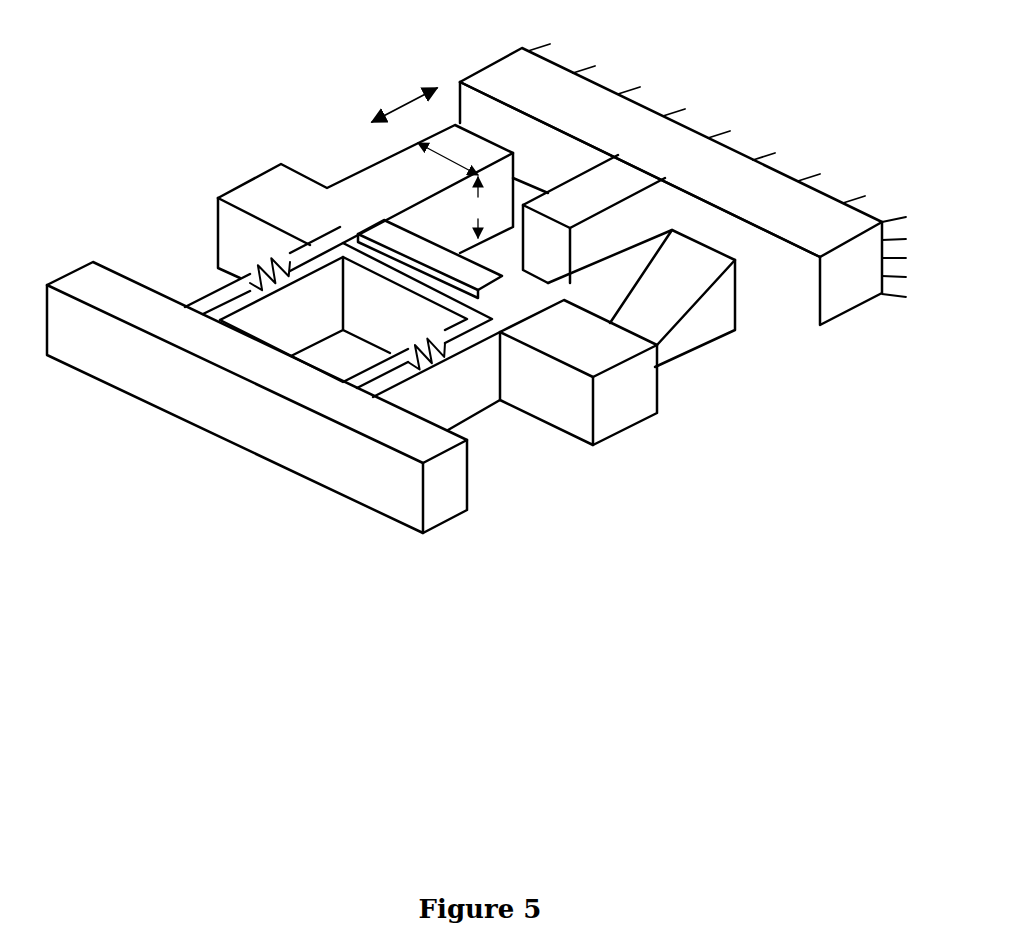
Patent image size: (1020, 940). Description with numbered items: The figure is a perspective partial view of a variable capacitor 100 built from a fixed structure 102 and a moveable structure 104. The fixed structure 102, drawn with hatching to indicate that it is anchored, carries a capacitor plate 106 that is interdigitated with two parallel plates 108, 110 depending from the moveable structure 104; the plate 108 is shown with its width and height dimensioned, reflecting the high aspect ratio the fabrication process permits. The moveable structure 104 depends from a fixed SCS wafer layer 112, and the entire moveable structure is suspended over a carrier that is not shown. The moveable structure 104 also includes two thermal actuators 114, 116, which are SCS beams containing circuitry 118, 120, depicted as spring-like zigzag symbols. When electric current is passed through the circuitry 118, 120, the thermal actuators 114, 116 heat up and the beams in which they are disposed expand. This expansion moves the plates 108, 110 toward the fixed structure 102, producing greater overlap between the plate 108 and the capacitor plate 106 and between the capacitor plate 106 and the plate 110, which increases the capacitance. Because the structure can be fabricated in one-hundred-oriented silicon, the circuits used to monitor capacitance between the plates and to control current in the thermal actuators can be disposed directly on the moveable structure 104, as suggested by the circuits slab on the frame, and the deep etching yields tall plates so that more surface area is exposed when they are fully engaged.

The variable capacitor 100 is at (308, 74).
The fixed structure 102 is at (478, 72).
The moveable structure 104 is at (662, 390).
The capacitor plate 106 is at (617, 185).
The parallel plate 108 is at (348, 178).
The parallel plate 110 is at (700, 333).
The fixed SCS wafer layer 112 is at (472, 480).
The thermal actuator 114 is at (230, 281).
The thermal actuator 116 is at (463, 397).
The circuitry 118 is at (268, 296).
The circuitry 120 is at (415, 343).